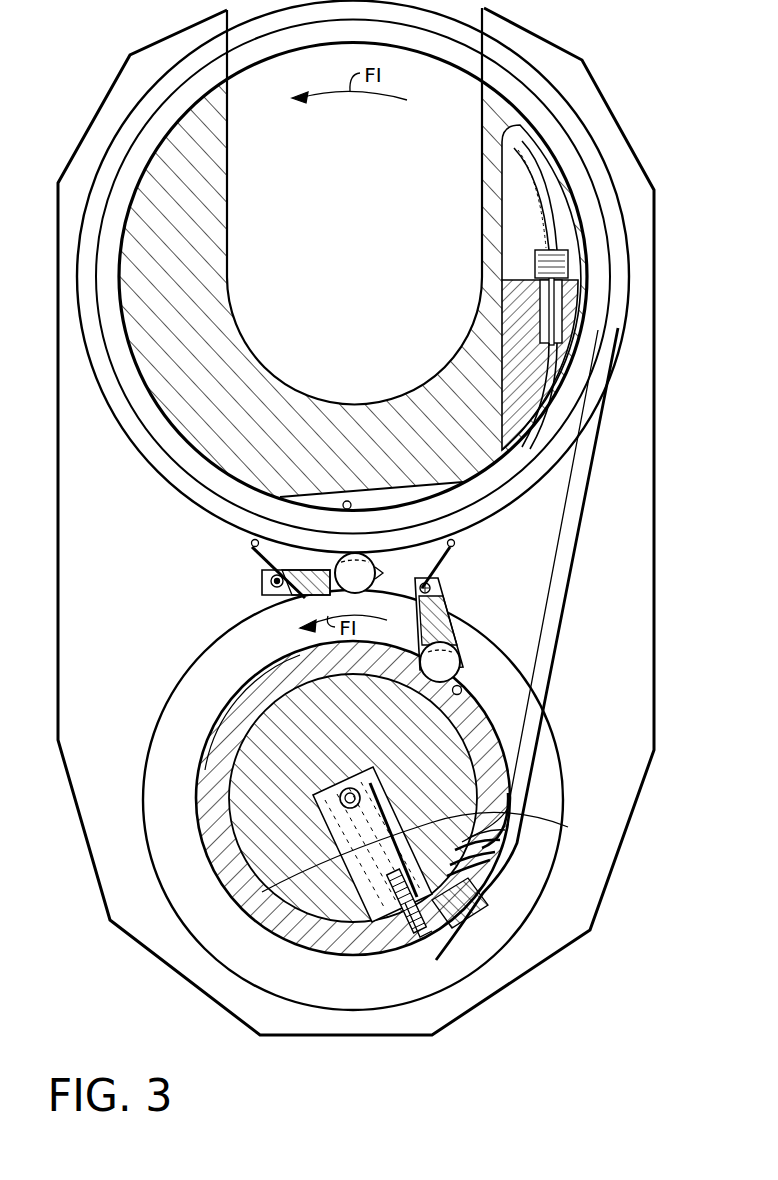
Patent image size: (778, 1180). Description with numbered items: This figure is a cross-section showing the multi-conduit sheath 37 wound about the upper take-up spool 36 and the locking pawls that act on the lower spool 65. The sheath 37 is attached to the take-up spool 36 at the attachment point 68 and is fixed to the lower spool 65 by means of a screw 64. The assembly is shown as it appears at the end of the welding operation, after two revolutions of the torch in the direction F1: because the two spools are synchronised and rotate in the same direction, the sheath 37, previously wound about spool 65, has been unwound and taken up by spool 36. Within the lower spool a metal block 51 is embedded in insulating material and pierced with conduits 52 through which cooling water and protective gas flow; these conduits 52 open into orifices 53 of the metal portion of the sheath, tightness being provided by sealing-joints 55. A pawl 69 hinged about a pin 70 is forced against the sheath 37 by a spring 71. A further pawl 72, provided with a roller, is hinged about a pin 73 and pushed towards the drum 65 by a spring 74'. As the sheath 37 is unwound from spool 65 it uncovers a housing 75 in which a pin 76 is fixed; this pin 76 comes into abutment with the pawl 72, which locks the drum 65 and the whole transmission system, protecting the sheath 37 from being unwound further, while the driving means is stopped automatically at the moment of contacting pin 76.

The take-up spool 36 is at (158, 143).
The multi-conduit sheath 37 is at (587, 450).
The attachment point of sheath to spool 36 68 is at (497, 313).
The spring 71 is at (257, 563).
The pin 70 is at (262, 580).
The pawl 69 is at (310, 578).
The spring 74' is at (463, 564).
The pin 73 is at (440, 587).
The pawl 72 is at (450, 620).
The pin 76 is at (462, 690).
The housing 75 is at (470, 707).
The spool 65 is at (195, 800).
The conduits 52 is at (566, 827).
The sealing-joints 55 is at (505, 828).
The orifices 53 is at (447, 926).
The metal block 51 is at (262, 892).
The screw 64 is at (417, 947).